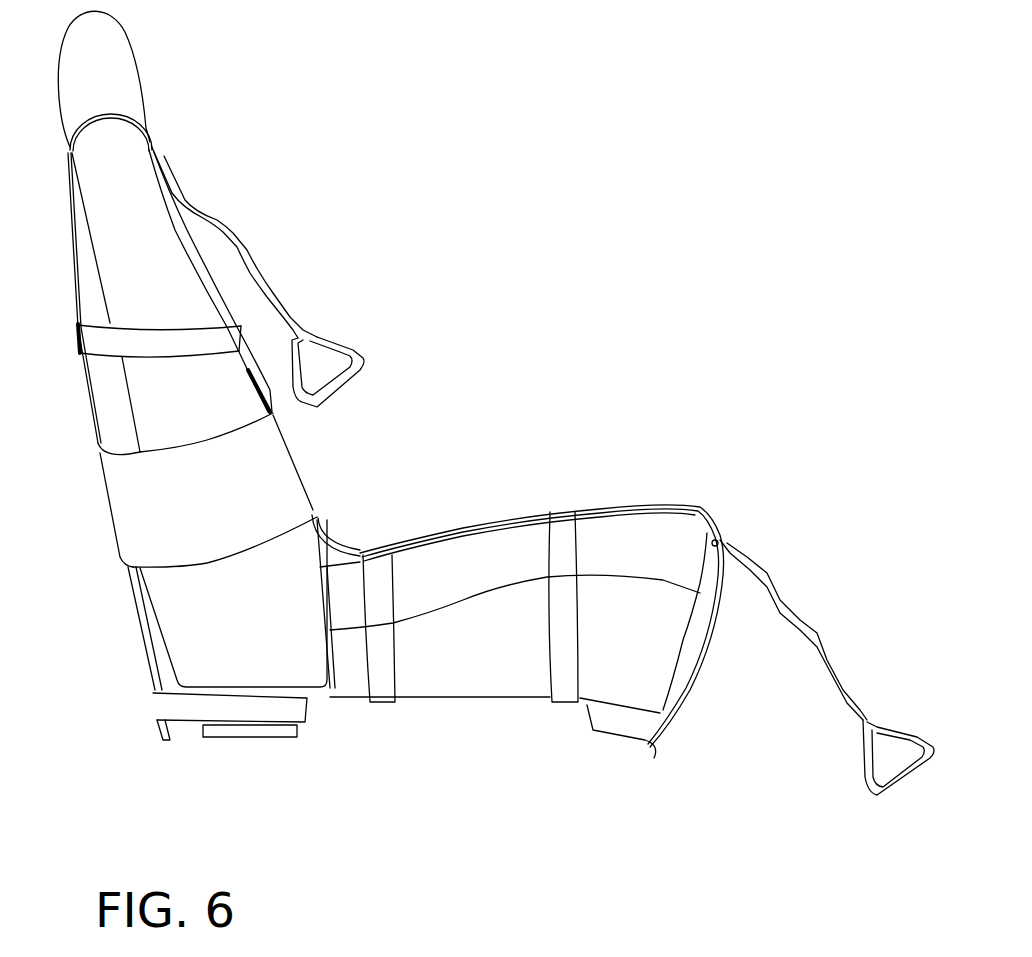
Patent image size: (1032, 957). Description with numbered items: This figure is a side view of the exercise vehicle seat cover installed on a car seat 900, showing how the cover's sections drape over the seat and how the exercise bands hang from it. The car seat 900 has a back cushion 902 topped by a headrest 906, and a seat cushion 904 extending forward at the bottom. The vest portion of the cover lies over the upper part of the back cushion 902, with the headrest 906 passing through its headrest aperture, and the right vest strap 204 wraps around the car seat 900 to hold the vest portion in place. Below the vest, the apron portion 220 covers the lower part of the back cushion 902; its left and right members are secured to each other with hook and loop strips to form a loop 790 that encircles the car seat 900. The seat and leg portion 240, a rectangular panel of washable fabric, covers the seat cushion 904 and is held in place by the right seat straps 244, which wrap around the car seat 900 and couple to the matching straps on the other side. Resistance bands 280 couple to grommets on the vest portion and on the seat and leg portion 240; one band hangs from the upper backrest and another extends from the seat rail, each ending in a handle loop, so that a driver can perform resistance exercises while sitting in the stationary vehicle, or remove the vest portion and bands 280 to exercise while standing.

The headrest 906 is at (118, 38).
The back cushion 902 is at (137, 197).
The resistance bands 280 is at (260, 293).
The right vest strap 204 is at (133, 343).
The loop 790 is at (150, 505).
The apron portion 220 is at (307, 475).
The seat cushion 904 is at (498, 568).
The seat and leg portion 240 is at (638, 507).
The right seat straps 244 is at (560, 638).
The car seat 900 is at (227, 658).